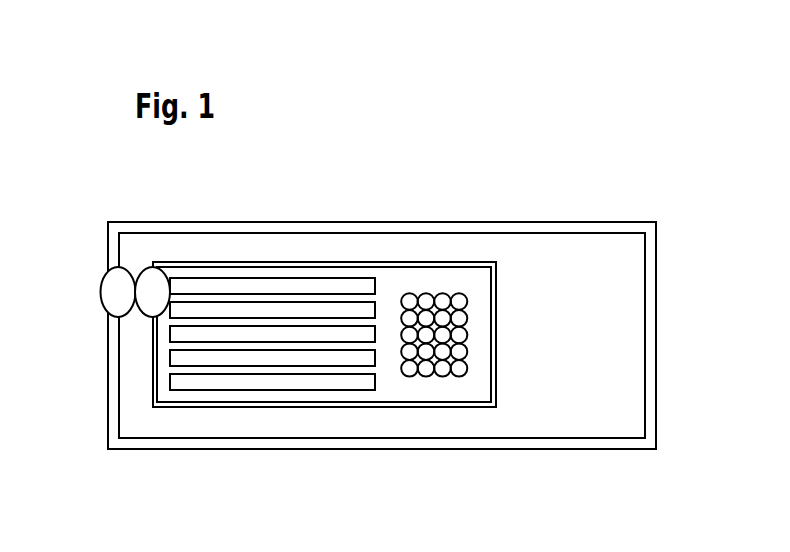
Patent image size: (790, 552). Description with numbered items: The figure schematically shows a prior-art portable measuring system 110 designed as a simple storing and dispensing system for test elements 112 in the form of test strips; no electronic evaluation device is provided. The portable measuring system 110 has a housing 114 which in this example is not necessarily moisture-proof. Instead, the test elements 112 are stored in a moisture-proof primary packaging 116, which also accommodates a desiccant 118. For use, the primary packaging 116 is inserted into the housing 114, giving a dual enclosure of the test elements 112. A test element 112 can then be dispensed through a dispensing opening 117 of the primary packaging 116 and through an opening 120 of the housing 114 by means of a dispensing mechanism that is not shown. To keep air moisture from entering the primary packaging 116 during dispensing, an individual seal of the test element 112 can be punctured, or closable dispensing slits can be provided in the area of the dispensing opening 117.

The portable measuring system 110 is at (573, 194).
The test elements 112 is at (263, 285).
The housing 114 is at (646, 287).
The primary packaging 116 is at (336, 404).
The dispensing opening 117 is at (145, 264).
The desiccant 118 is at (442, 352).
The opening 120 is at (105, 268).